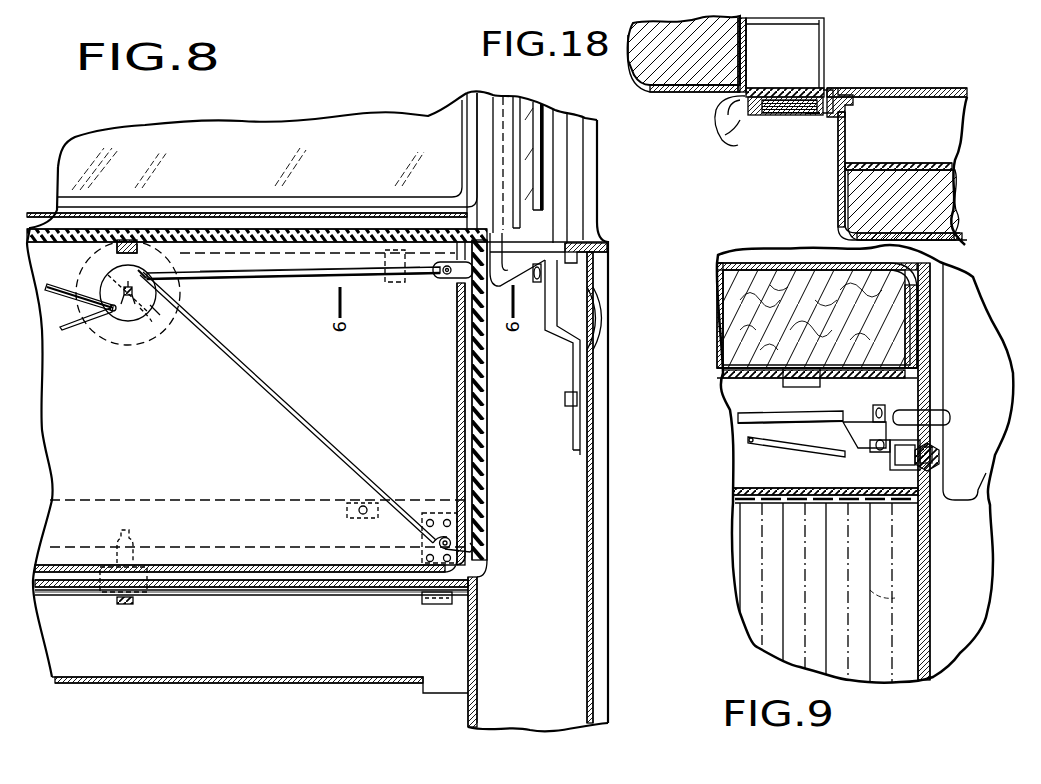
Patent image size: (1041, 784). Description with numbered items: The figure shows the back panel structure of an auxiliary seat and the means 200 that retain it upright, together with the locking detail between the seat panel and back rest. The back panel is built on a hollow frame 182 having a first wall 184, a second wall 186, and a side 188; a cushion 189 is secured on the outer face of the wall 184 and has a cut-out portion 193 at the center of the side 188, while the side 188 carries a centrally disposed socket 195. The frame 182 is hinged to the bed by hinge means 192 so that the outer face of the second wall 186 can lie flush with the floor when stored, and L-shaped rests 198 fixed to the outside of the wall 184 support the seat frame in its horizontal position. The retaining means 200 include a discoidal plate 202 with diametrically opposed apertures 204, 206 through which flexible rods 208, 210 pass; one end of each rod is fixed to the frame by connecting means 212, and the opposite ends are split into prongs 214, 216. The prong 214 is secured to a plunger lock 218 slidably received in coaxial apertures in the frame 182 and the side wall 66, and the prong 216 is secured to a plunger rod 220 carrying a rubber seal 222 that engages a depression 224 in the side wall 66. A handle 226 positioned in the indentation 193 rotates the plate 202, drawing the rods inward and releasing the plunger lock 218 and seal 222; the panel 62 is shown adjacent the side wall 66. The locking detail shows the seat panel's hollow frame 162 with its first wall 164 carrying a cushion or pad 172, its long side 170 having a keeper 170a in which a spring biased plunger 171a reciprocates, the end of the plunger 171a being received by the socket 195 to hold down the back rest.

In FIG. 9, the door panel 62 is at (883, 597).
In FIG. 9, the side wall 66 is at (960, 540).
In FIG. 18, the hollow frame 162 is at (827, 48).
In FIG. 18, the first wall 164 is at (747, 48).
In FIG. 18, the long side 170 is at (760, 90).
In FIG. 8, the keeper 170a is at (100, 598).
In FIG. 18, the keeper 170a is at (800, 120).
In FIG. 8, the spring biased plunger 171a is at (130, 537).
In FIG. 18, the spring biased plunger 171a is at (733, 110).
In FIG. 18, the cushion or pad 172 is at (655, 93).
In FIG. 8, the hollow frame 182 is at (223, 545).
In FIG. 18, the hollow frame 182 is at (927, 90).
In FIG. 9, the hollow frame 182 is at (867, 505).
In FIG. 18, the first wall 184 is at (878, 165).
In FIG. 9, the first wall 184 is at (753, 378).
In FIG. 9, the second wall 186 is at (763, 492).
In FIG. 8, the side 188 is at (262, 500).
In FIG. 18, the side 188 is at (842, 153).
In FIG. 18, the cushion 189 is at (932, 212).
In FIG. 9, the cushion 189 is at (767, 307).
In FIG. 9, the hinge means 192 is at (770, 500).
In FIG. 8, the cut-out portion 193 is at (152, 322).
In FIG. 8, the socket 195 is at (115, 246).
In FIG. 18, the socket 195 is at (838, 98).
In FIG. 8, the rests 198 is at (440, 604).
In FIG. 8, the retaining means 200 is at (232, 350).
In FIG. 8, the discoidal plate 202 is at (130, 322).
In FIG. 8, the aperture 204 is at (144, 273).
In FIG. 8, the aperture 206 is at (115, 315).
In FIG. 8, the flexible rod 208 is at (302, 275).
In FIG. 9, the flexible rod 208 is at (798, 412).
In FIG. 8, the flexible rod 210 is at (62, 330).
In FIG. 8, the connecting means 212 is at (462, 540).
In FIG. 9, the prong 214 is at (858, 420).
In FIG. 8, the prong 216 is at (440, 279).
In FIG. 9, the prong 216 is at (855, 437).
In FIG. 8, the plunger lock 218 is at (500, 246).
In FIG. 9, the plunger lock 218 is at (940, 414).
In FIG. 9, the plunger rod 220 is at (903, 460).
In FIG. 9, the rubber seal 222 is at (934, 447).
In FIG. 9, the depression 224 is at (940, 464).
In FIG. 8, the handle 226 is at (155, 317).